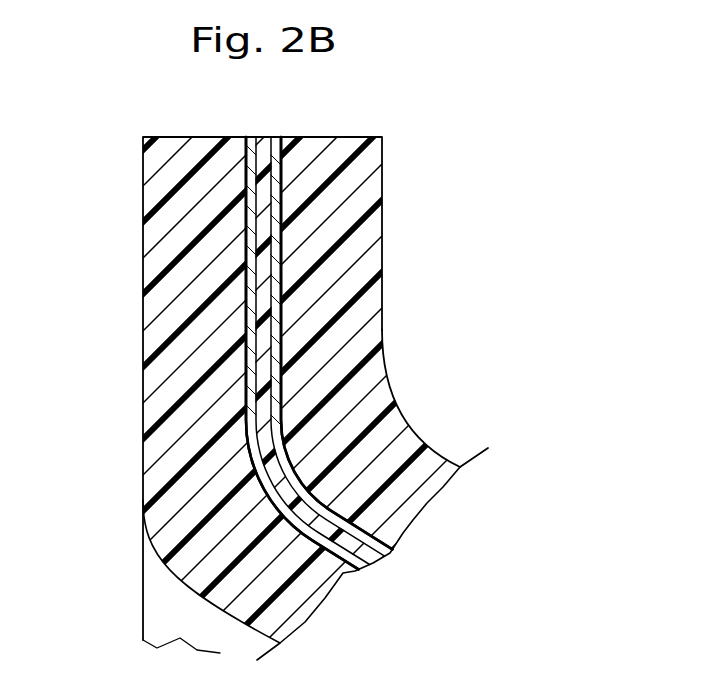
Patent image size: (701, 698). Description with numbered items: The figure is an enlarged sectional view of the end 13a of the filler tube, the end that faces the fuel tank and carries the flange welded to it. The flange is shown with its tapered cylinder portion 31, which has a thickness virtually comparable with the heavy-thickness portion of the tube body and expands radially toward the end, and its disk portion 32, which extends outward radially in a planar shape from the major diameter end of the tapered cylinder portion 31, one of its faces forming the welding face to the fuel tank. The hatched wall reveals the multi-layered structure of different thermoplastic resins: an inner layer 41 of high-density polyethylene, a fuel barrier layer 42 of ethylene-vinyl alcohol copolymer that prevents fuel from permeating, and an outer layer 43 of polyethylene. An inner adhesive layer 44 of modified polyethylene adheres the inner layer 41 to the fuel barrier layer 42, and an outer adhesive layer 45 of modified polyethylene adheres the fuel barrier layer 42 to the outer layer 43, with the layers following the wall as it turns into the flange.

The inner layer 41 is at (143, 173).
The inner adhesive layer 44 is at (253, 237).
The fuel barrier layer 42 is at (260, 288).
The outer adhesive layer 45 is at (277, 342).
The outer layer 43 is at (310, 397).
The disk portion 32 is at (390, 180).
The tapered cylinder portion 31 is at (460, 462).
The end of the filler tube 13a is at (497, 249).